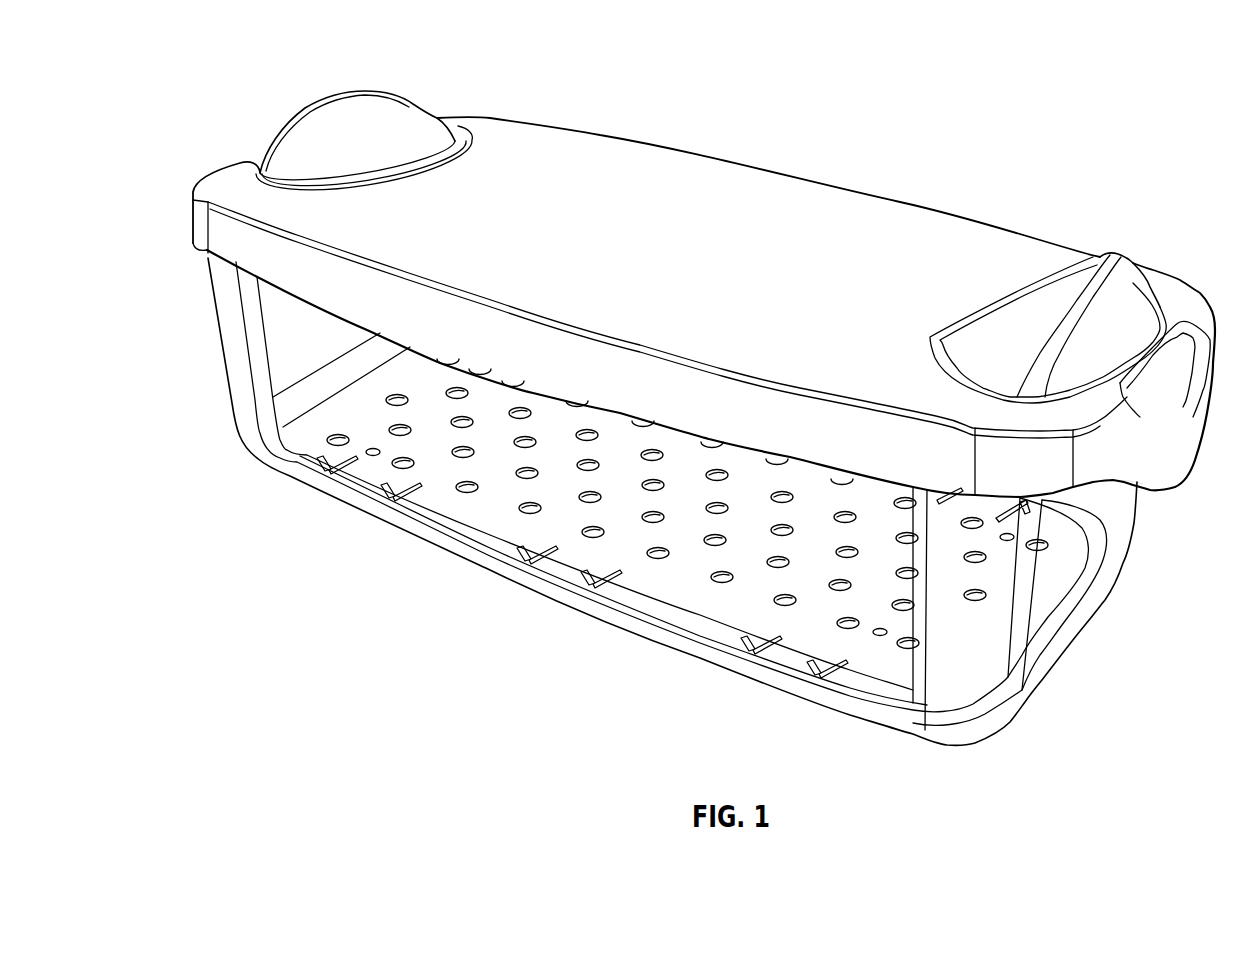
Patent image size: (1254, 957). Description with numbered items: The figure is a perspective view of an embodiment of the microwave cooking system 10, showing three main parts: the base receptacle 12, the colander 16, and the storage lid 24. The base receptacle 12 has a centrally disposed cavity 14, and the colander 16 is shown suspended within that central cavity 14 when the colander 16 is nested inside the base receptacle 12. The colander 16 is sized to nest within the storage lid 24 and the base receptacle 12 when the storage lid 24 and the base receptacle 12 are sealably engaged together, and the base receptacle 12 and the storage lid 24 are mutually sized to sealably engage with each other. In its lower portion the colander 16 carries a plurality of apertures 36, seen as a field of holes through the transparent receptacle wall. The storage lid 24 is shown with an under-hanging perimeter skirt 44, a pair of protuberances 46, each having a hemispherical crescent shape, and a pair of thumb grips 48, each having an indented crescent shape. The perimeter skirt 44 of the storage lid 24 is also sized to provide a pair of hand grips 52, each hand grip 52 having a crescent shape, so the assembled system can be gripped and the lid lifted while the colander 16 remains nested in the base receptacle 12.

The microwave cooking system 10 is at (283, 45).
The base receptacle 12 is at (222, 360).
The centrally disposed cavity 14 is at (1040, 657).
The colander 16 is at (1050, 617).
The storage lid 24 is at (722, 258).
The apertures 36 is at (1040, 547).
The under-hanging perimeter skirt 44 is at (385, 310).
The protuberance 46 is at (1107, 254).
The thumb grip 48 is at (1157, 398).
The hand grip 52 is at (1165, 465).